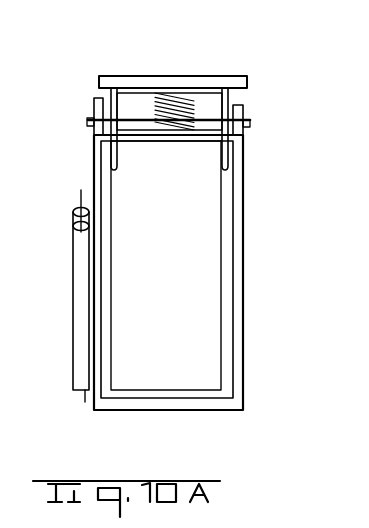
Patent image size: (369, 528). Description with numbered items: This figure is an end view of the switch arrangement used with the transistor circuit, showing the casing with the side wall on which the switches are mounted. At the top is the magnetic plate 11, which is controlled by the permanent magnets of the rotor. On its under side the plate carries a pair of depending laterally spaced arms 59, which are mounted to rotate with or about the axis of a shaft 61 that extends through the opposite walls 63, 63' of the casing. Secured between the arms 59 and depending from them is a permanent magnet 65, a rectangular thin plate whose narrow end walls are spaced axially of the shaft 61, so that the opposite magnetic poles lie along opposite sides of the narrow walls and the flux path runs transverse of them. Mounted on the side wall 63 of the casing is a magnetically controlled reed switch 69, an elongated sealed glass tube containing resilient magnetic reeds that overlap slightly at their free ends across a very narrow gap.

The magnetic plate 11 is at (223, 77).
The depending laterally spaced arms 59 is at (114, 98).
The shaft 61 is at (248, 126).
The casing wall 63 is at (138, 272).
The casing wall 63' is at (206, 269).
The permanent magnet 65 is at (205, 368).
The reed switch 69 is at (73, 337).